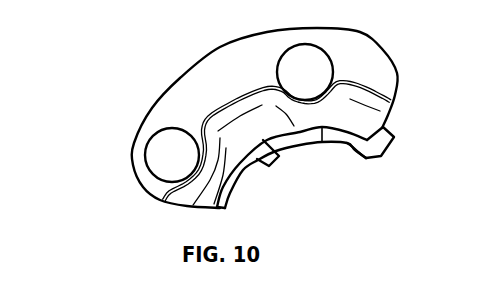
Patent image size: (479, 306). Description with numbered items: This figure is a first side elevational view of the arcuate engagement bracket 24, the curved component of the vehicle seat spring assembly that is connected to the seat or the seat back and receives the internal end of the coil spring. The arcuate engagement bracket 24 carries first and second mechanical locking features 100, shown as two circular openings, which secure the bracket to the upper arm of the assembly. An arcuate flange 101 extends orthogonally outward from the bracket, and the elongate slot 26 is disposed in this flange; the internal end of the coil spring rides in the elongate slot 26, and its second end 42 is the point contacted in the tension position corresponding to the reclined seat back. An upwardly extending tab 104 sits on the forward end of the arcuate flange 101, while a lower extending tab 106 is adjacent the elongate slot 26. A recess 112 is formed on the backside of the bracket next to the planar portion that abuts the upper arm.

The arcuate engagement bracket 24 is at (200, 88).
The elongate slot 26 is at (301, 132).
The mechanical locking features 100 is at (307, 64).
The recess 112 is at (389, 110).
The second end 42 is at (310, 143).
The arcuate flange 101 is at (347, 150).
The upwardly extending tab 104 is at (390, 148).
The lower extending tab 106 is at (278, 157).